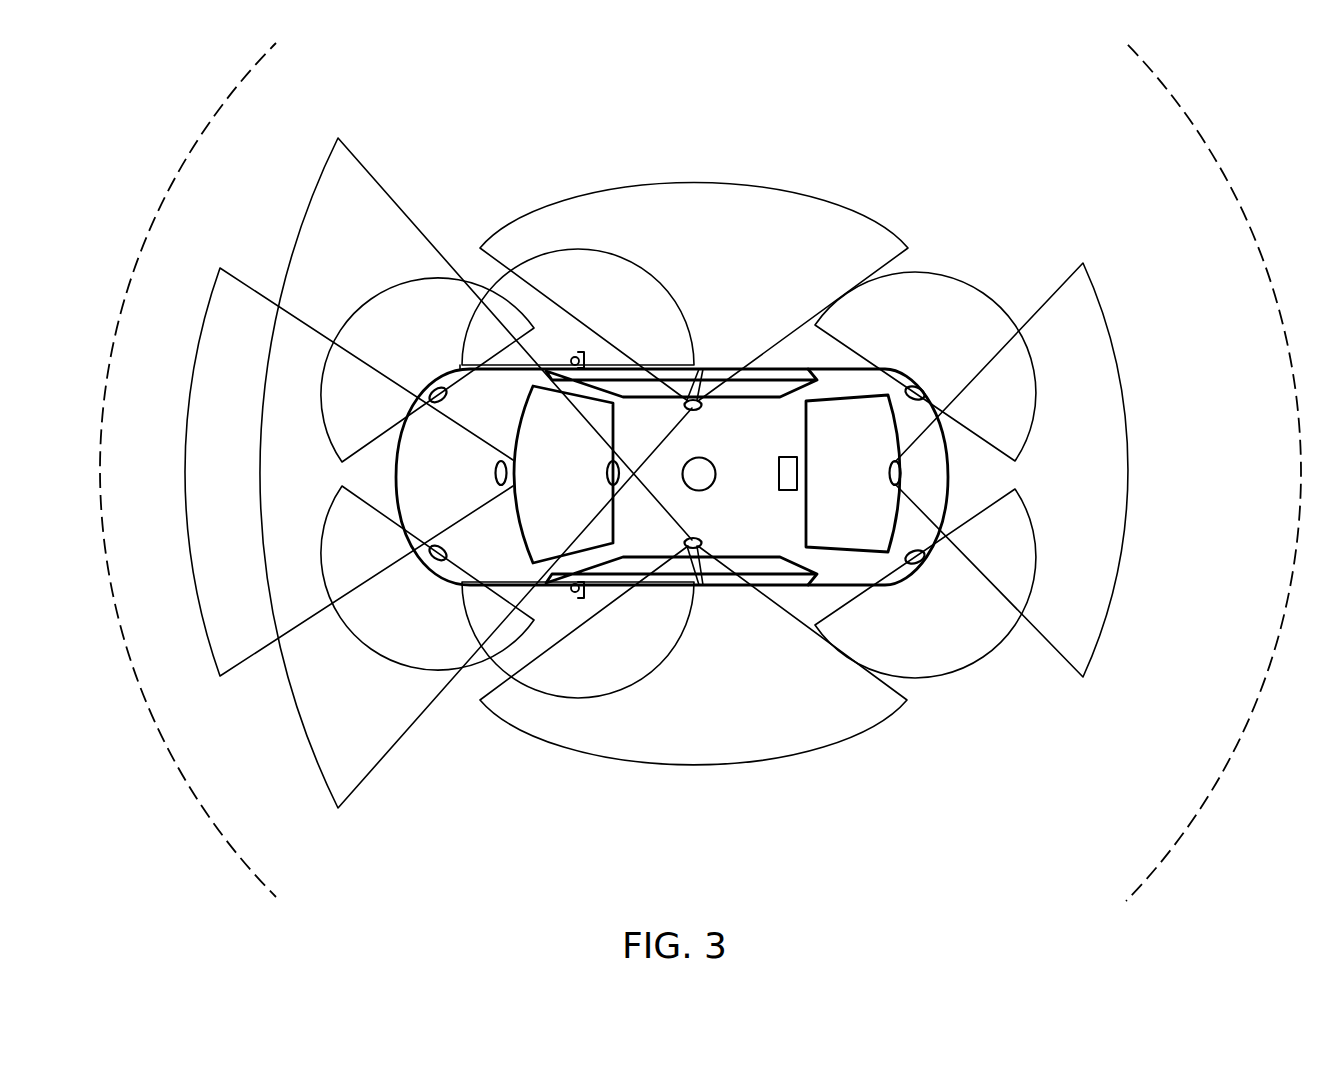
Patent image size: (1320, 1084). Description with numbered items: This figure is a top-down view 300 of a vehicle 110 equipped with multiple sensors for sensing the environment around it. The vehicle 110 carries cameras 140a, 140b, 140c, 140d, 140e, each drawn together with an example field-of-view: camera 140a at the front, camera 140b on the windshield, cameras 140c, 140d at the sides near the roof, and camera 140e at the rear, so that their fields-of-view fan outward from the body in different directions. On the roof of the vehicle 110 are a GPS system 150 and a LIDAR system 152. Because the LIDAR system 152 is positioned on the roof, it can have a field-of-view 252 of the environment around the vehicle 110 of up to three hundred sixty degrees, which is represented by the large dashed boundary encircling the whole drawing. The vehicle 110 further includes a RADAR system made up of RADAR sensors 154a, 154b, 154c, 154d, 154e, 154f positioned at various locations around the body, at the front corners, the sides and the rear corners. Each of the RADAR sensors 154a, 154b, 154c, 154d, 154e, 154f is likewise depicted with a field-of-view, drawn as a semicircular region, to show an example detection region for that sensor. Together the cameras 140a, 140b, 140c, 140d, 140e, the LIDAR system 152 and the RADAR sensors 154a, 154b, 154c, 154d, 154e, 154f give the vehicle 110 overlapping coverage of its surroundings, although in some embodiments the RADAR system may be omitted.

The sensor system 300 is at (527, 152).
The field-of-view 252 is at (1163, 90).
The vehicle 110 is at (731, 369).
The camera 140a is at (495, 473).
The camera 140b is at (640, 444).
The camera 140c is at (700, 538).
The camera 140d is at (697, 412).
The camera 140e is at (890, 467).
The GPS system 150 is at (787, 455).
The LIDAR system 152 is at (698, 492).
The RADAR sensor 154a is at (436, 388).
The RADAR sensor 154b is at (580, 354).
The RADAR sensor 154c is at (919, 386).
The RADAR sensor 154d is at (920, 566).
The RADAR sensor 154e is at (580, 598).
The RADAR sensor 154f is at (440, 562).